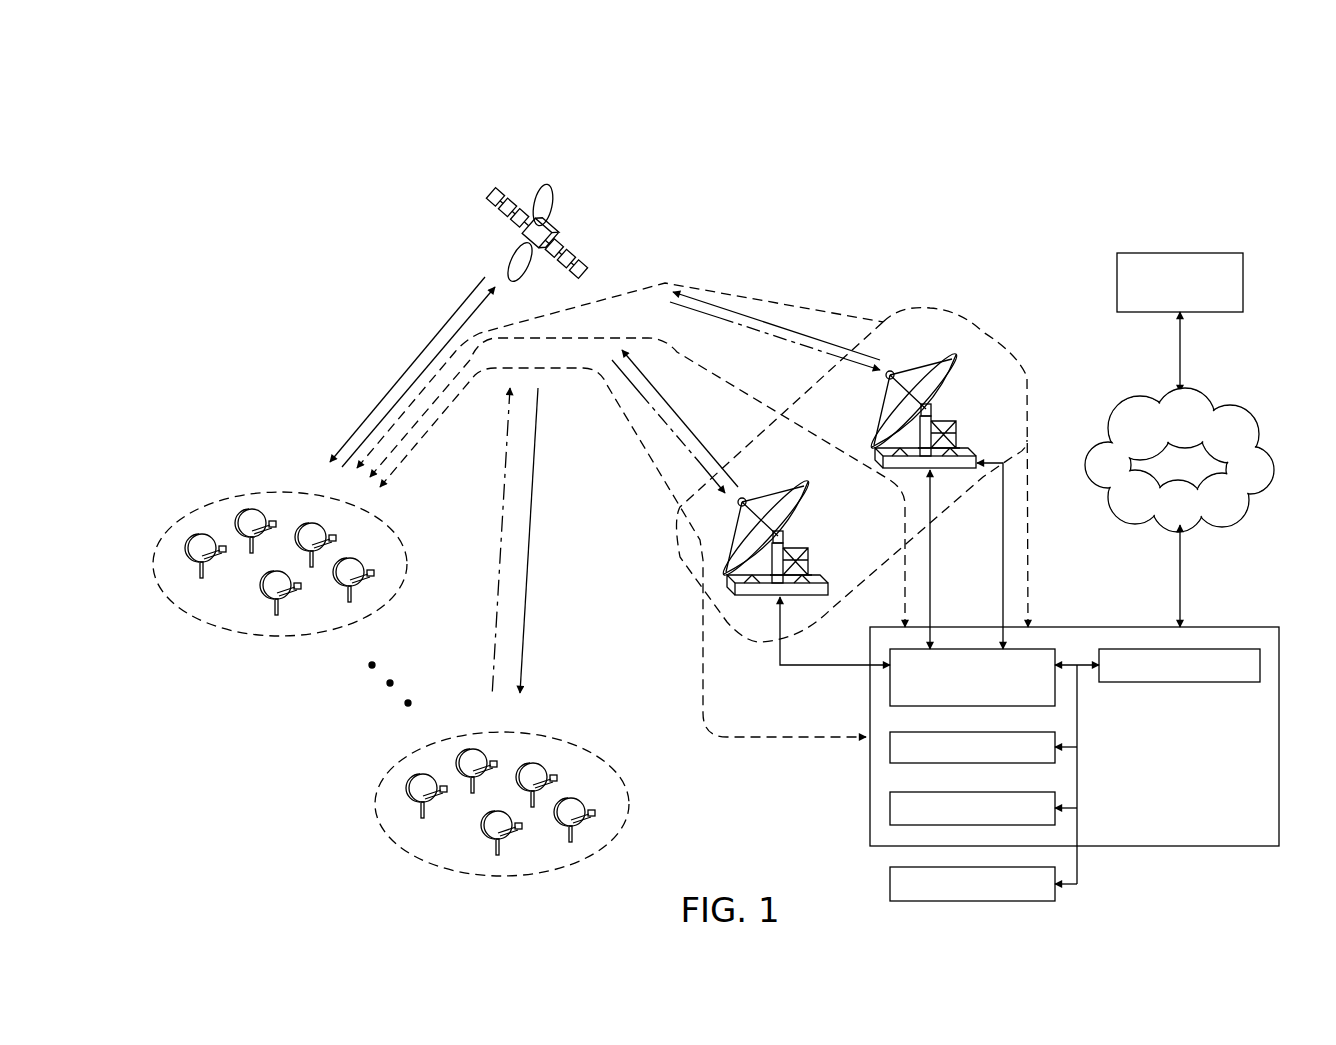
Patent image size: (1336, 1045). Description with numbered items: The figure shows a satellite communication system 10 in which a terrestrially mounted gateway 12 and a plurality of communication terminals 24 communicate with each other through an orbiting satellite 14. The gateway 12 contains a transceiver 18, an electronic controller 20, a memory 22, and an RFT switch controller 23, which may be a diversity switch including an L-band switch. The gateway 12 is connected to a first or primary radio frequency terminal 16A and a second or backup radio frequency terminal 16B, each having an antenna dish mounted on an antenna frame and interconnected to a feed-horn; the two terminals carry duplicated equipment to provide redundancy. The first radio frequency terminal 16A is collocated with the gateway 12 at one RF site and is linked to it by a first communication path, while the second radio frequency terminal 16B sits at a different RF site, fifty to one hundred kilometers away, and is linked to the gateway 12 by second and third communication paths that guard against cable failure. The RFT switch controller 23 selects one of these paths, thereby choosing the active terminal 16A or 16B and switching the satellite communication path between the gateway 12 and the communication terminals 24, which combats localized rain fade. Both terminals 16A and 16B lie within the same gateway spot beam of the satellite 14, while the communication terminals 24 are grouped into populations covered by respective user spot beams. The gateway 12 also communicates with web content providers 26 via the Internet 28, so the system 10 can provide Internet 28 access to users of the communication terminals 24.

The satellite communication system 10 is at (985, 212).
The gateway 12 is at (1225, 612).
The satellite 14 is at (590, 192).
The first radio frequency terminal 16A is at (826, 582).
The second radio frequency terminal 16B is at (973, 453).
The transceiver 18 is at (890, 757).
The controller 20 is at (1200, 682).
The memory 22 is at (890, 808).
The RFT switch controller 23 is at (1045, 649).
The communication terminals 24 is at (391, 672).
The web content providers 26 is at (1213, 253).
The Internet 28 is at (1228, 405).